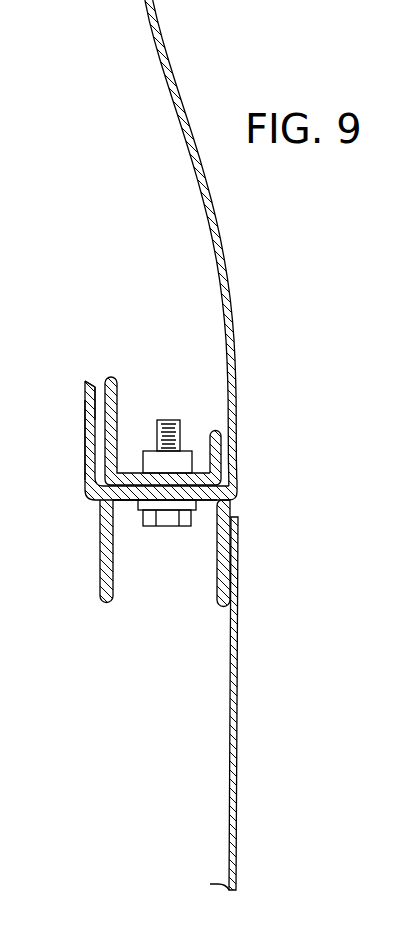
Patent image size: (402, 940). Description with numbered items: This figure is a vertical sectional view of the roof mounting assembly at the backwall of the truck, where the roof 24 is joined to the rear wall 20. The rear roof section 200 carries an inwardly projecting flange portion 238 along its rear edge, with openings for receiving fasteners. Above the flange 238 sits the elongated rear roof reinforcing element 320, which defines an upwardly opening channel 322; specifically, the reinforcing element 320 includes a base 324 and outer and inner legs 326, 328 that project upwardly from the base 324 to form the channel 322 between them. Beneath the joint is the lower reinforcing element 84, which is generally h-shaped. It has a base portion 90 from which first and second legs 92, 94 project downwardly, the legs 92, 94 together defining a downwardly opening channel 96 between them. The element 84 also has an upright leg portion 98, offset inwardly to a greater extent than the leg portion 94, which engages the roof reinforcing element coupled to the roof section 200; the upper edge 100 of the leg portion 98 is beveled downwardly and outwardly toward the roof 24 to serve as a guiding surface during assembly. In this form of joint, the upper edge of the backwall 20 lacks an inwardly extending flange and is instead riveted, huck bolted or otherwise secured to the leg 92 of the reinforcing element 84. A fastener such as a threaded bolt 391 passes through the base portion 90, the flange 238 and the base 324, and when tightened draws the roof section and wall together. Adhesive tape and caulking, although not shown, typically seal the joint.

The rear wall 20 is at (238, 743).
The roof 24 is at (230, 240).
The lower reinforcing element 84 is at (91, 516).
The base portion 90 is at (128, 503).
The first leg 92 is at (231, 585).
The second leg 94 is at (100, 575).
The downwardly opening channel 96 is at (187, 543).
The reinforcing element engaging portion 98 is at (84, 456).
The upper edge of leg portion 100 is at (94, 380).
The rear roof section 200 is at (231, 299).
The inwardly projecting flange portion 238 is at (181, 479).
The rear roof reinforcing element 320 is at (133, 399).
The upwardly opening channel 322 is at (144, 449).
The base 324 is at (236, 502).
The outer leg 326 is at (217, 460).
The inner leg 328 is at (103, 433).
The threaded bolt 391 is at (177, 450).